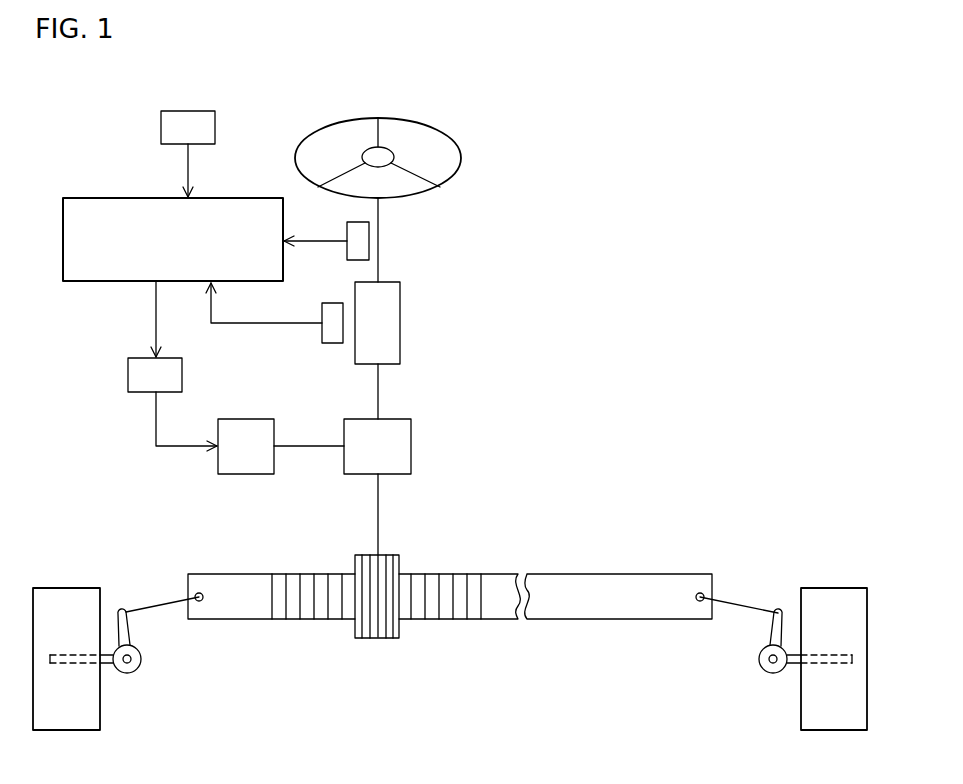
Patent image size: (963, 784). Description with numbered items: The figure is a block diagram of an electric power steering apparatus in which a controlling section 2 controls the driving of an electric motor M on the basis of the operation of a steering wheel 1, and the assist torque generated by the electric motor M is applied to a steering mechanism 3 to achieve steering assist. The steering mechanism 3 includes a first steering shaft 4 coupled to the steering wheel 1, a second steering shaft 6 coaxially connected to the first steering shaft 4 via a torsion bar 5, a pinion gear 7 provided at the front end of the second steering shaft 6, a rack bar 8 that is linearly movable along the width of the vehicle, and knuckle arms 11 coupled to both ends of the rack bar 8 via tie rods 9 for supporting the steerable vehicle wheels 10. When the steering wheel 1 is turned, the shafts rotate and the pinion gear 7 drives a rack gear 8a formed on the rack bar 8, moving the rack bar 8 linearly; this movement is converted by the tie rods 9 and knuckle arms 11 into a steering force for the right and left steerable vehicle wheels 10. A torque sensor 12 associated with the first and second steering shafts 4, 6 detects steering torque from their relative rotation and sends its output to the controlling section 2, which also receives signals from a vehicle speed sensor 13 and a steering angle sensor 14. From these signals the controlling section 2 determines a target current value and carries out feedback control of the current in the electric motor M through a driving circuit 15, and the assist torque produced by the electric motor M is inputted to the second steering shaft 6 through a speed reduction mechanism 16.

The steering wheel 1 is at (405, 118).
The controlling section 2 is at (88, 198).
The steering mechanism 3 is at (450, 590).
The first steering shaft 4 is at (380, 270).
The torsion bar 5 is at (393, 309).
The second steering shaft 6 is at (379, 393).
The pinion gear 7 is at (377, 628).
The rack bar 8 is at (512, 622).
The rack gear 8a is at (323, 611).
The tie rods 9 is at (155, 603).
The steerable vehicle wheels 10 is at (93, 702).
The knuckle arms 11 is at (130, 628).
The torque sensor 12 is at (332, 333).
The vehicle speed sensor 13 is at (200, 117).
The steering angle sensor 14 is at (362, 240).
The driving circuit 15 is at (133, 373).
The speed reduction mechanism 16 is at (403, 462).
The electric motor M is at (247, 467).